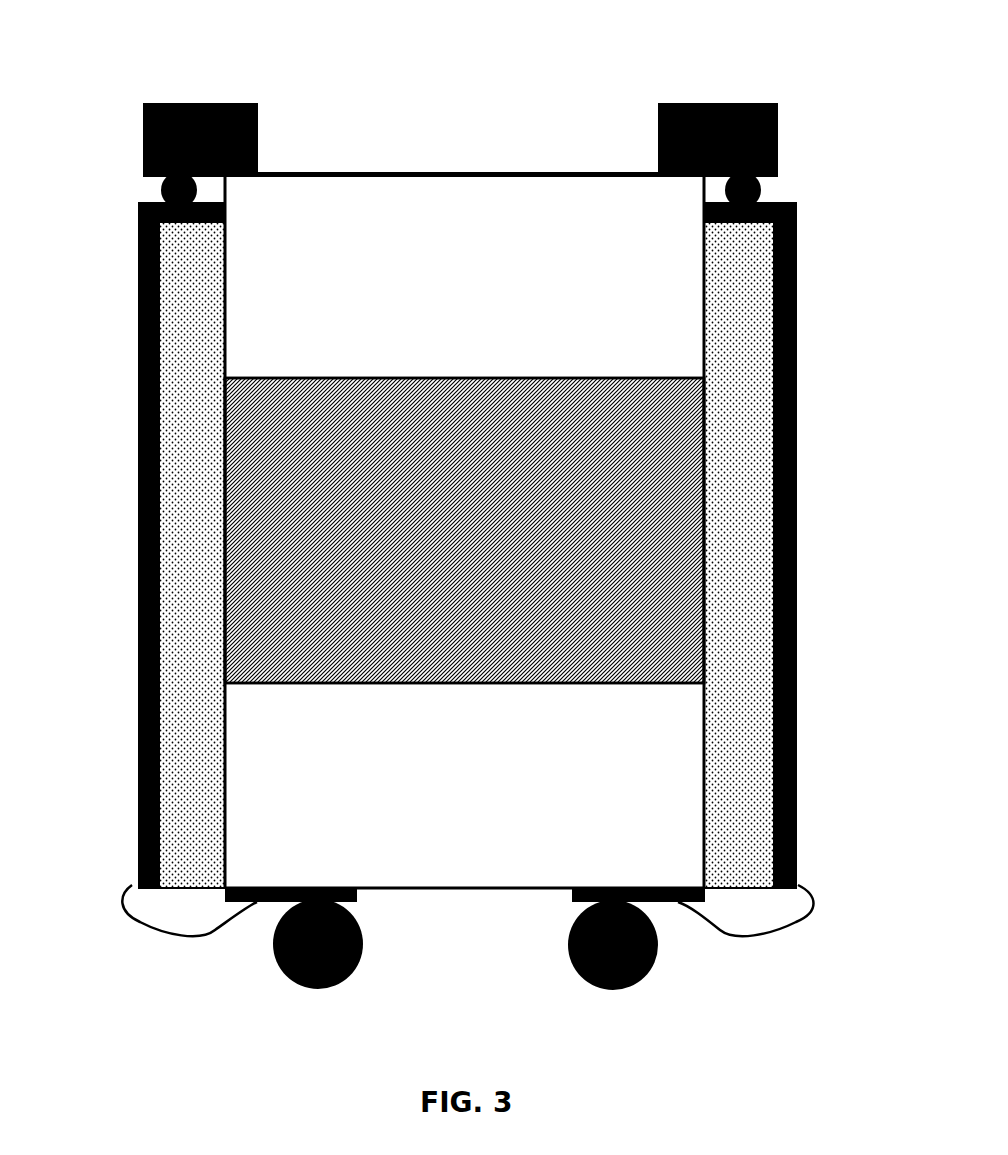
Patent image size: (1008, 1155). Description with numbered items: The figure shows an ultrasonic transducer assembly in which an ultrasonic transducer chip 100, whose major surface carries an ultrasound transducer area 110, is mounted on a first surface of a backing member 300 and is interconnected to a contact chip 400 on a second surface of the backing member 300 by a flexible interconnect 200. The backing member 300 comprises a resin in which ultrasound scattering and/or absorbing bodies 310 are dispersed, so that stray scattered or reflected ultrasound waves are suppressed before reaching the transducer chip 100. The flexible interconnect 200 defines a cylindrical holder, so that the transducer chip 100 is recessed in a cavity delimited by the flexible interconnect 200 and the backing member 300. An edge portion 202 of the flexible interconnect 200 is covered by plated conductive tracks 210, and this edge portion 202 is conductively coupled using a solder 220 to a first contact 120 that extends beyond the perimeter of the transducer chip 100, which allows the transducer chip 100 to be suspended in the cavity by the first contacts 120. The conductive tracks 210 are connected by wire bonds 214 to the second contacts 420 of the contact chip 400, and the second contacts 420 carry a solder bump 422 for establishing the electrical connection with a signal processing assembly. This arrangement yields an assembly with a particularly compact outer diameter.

The ultrasonic transducer chip 100 is at (592, 188).
The ultrasound transducer area 110 is at (462, 172).
The first contact 120 is at (213, 103).
The flexible interconnect 200 is at (180, 372).
The edge portion 202 is at (722, 223).
The conductive tracks 210 is at (138, 463).
The wire bonds 214 is at (165, 928).
The solder 220 is at (165, 186).
The backing member 300 is at (377, 405).
The ultrasound scattering and/or absorbing bodies 310 is at (527, 405).
The contact chip 400 is at (470, 875).
The second contacts 420 is at (267, 903).
The solder bump 422 is at (292, 982).